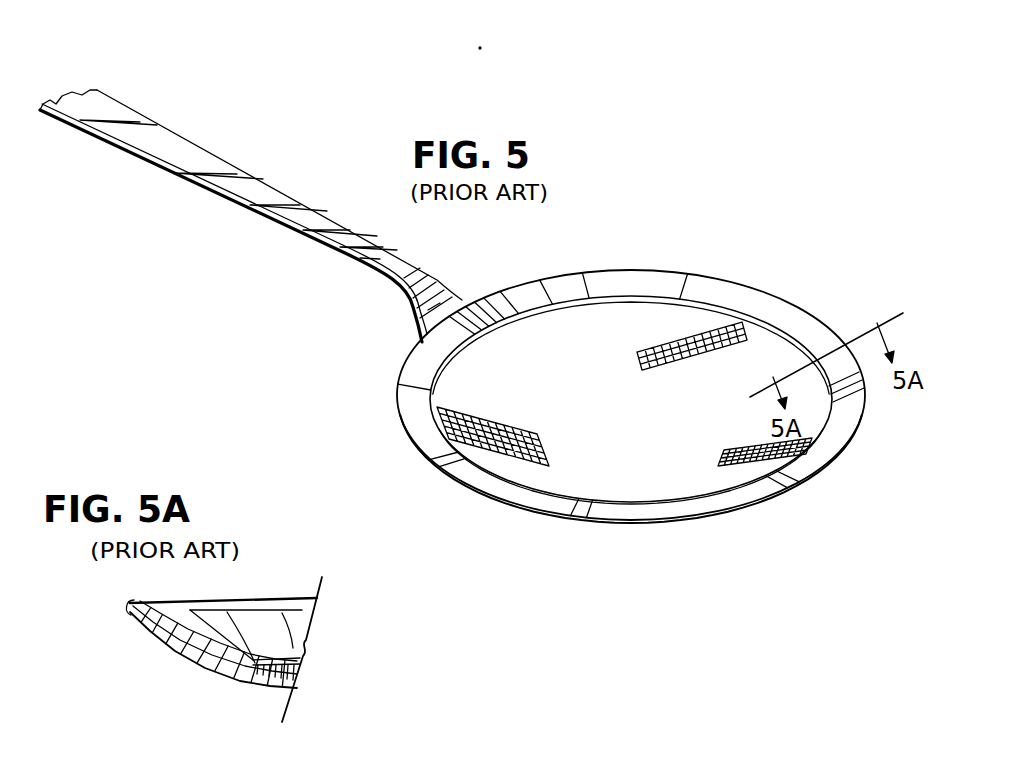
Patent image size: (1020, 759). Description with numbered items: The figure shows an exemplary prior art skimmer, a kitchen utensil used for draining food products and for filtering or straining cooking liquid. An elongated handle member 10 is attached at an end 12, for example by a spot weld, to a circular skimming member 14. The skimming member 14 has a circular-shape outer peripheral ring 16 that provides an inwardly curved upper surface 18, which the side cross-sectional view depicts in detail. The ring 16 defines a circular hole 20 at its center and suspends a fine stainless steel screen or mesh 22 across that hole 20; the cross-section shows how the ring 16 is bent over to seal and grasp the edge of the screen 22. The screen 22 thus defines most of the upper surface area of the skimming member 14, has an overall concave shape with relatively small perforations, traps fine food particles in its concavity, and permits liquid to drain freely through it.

In FIG. 5, the elongated handle member 10 is at (197, 147).
In FIG. 5, the end 12 is at (473, 299).
In FIG. 5, the circular skimming member 14 is at (723, 278).
In FIG. 5, the outer peripheral ring 16 is at (820, 328).
In FIG. 5A, the outer peripheral ring 16 is at (128, 623).
In FIG. 5, the inwardly curved upper surface 18 is at (408, 396).
In FIG. 5A, the inwardly curved upper surface 18 is at (203, 636).
In FIG. 5, the circular hole 20 is at (684, 464).
In FIG. 5, the screen 22 is at (498, 462).
In FIG. 5A, the screen 22 is at (284, 672).